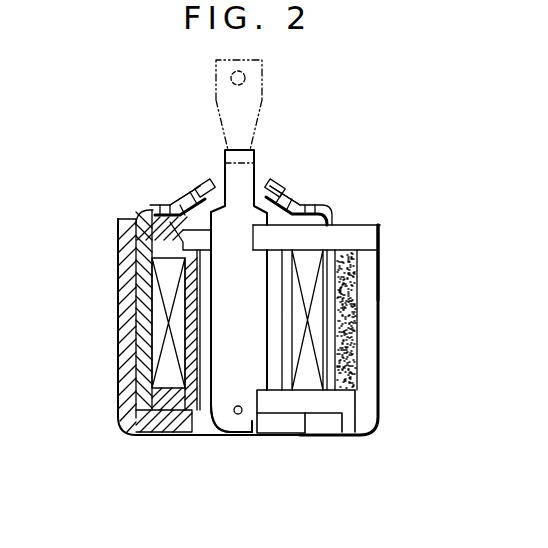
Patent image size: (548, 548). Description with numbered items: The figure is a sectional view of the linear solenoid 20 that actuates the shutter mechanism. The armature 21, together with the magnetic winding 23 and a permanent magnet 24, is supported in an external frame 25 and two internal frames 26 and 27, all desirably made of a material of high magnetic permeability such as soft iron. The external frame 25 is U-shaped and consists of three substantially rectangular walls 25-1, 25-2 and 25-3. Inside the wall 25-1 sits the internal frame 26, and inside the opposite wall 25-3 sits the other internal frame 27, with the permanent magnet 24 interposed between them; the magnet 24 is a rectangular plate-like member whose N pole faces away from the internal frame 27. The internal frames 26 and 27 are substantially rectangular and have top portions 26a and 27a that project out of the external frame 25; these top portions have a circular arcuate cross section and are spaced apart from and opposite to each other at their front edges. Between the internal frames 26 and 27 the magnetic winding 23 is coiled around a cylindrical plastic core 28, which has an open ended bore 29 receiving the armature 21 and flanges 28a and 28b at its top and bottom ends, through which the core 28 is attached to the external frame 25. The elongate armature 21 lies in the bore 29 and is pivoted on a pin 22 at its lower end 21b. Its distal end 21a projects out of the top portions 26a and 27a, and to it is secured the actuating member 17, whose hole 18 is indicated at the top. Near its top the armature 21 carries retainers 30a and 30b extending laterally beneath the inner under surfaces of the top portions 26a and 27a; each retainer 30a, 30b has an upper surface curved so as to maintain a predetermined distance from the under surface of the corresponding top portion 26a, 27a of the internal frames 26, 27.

The actuating member 17 is at (268, 108).
The hole 18 is at (246, 78).
The linear solenoid 20 is at (395, 207).
The armature 21 is at (186, 426).
The distal end of the armature 21a is at (246, 170).
The end of the armature 21b is at (219, 418).
The pin 22 is at (242, 412).
The magnetic winding 23 is at (162, 325).
The permanent magnet 24 is at (348, 357).
The external frame 25 is at (107, 236).
The wall 25-1 is at (118, 278).
The wall 25-2 is at (287, 428).
The wall 25-3 is at (378, 395).
The internal frame 26 is at (150, 212).
The top portion 26a is at (185, 198).
The internal frame 27 is at (327, 212).
The top portion 27a is at (300, 203).
The cylindrical plastic core 28 is at (148, 428).
The flange 28a is at (370, 240).
The flange 28b is at (345, 405).
The bore 29 is at (284, 303).
The retainer 30a is at (205, 196).
The retainer 30b is at (290, 203).